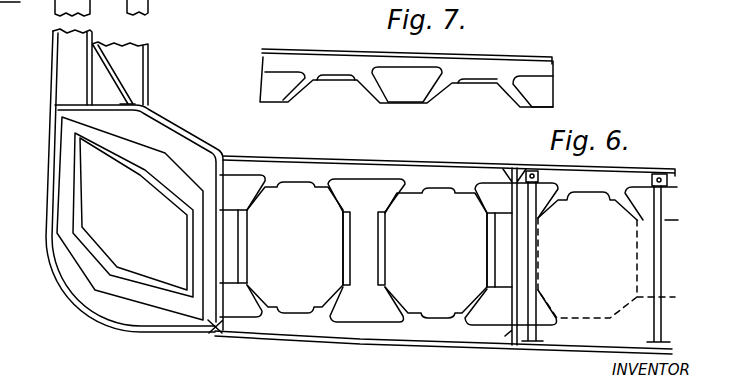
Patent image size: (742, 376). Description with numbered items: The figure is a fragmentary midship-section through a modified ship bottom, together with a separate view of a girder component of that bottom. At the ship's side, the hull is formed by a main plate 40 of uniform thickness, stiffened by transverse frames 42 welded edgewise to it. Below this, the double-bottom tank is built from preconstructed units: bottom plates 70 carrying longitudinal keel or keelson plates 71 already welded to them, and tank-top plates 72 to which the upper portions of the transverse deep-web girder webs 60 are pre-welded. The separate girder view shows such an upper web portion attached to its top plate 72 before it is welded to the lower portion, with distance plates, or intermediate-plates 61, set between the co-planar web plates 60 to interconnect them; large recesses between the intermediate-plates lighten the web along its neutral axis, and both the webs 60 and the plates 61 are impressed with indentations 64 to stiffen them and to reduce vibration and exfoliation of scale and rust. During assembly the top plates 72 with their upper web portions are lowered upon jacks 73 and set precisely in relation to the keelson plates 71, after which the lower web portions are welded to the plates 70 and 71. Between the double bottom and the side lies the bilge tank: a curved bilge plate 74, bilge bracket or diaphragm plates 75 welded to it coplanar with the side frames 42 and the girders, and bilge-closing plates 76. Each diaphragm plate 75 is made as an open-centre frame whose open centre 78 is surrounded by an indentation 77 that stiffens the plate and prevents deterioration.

In FIG. 6, the main plate 40 is at (53, 67).
In FIG. 6, the frame 42 is at (92, 9).
In FIG. 7, the web plate 60 is at (325, 60).
In FIG. 6, the web plate 60 is at (325, 143).
In FIG. 6, the intermediate-plate 61 is at (343, 247).
In FIG. 7, the indentation 64 is at (473, 83).
In FIG. 6, the indentation 64 is at (497, 235).
In FIG. 6, the bottom plate 70 is at (467, 350).
In FIG. 6, the keelson plate 71 is at (520, 271).
In FIG. 7, the top plate 72 is at (535, 56).
In FIG. 6, the top plate 72 is at (400, 163).
In FIG. 6, the jack 73 is at (538, 238).
In FIG. 6, the bilge plate 74 is at (50, 153).
In FIG. 6, the bilge bracket plate 75 is at (50, 203).
In FIG. 6, the bilge-closing plate 76 is at (168, 119).
In FIG. 6, the indentation 77 is at (67, 233).
In FIG. 6, the open centre 78 is at (105, 253).